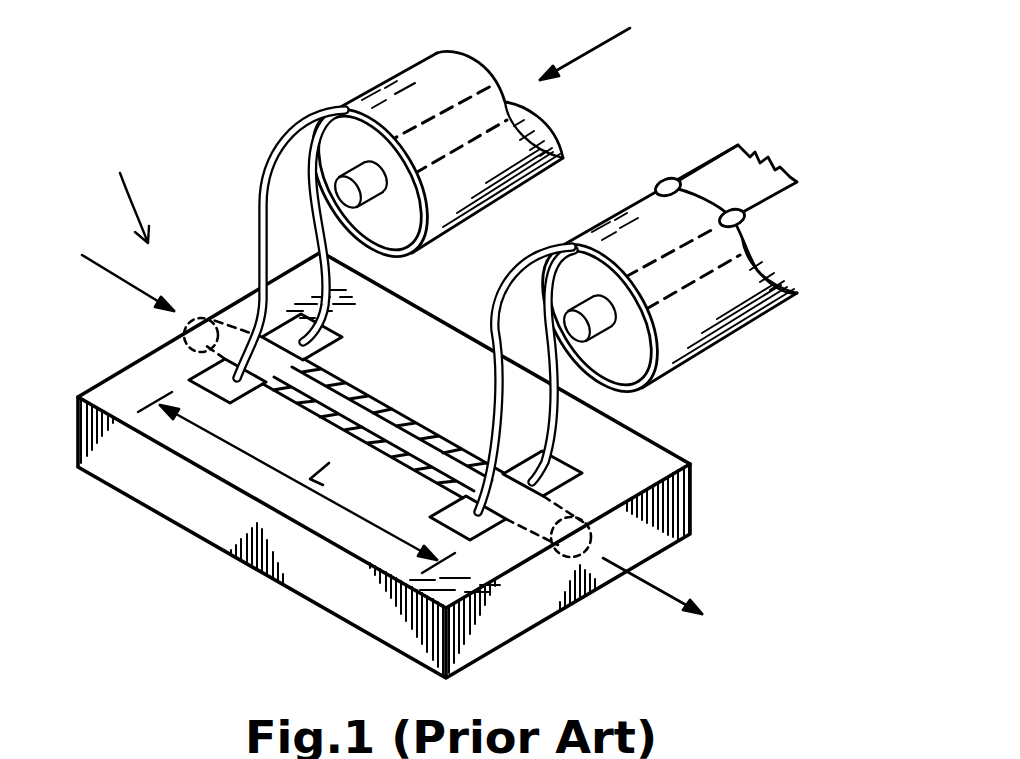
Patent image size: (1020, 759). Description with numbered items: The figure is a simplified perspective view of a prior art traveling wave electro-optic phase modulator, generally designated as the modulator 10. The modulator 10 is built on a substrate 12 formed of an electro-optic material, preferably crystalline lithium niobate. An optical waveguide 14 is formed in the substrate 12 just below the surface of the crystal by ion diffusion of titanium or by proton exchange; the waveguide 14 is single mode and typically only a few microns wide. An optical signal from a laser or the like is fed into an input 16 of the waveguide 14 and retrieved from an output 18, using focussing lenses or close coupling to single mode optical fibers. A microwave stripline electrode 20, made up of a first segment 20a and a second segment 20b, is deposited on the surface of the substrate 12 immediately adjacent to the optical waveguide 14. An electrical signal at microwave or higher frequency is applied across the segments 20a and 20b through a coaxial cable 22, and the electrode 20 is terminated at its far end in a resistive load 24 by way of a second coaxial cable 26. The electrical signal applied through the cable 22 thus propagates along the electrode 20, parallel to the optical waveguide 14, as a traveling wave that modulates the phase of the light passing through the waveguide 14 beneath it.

The traveling wave modulator 10 is at (124, 193).
The substrate 12 is at (690, 508).
The optical waveguide 14 is at (335, 398).
The input 16 is at (210, 320).
The output 18 is at (567, 557).
The microwave stripline electrode 20 is at (385, 408).
The first segment 20a is at (430, 436).
The second segment 20b is at (376, 446).
The coaxial cable 22 is at (380, 80).
The resistive load 24 is at (770, 165).
The coaxial cable 26 is at (630, 208).